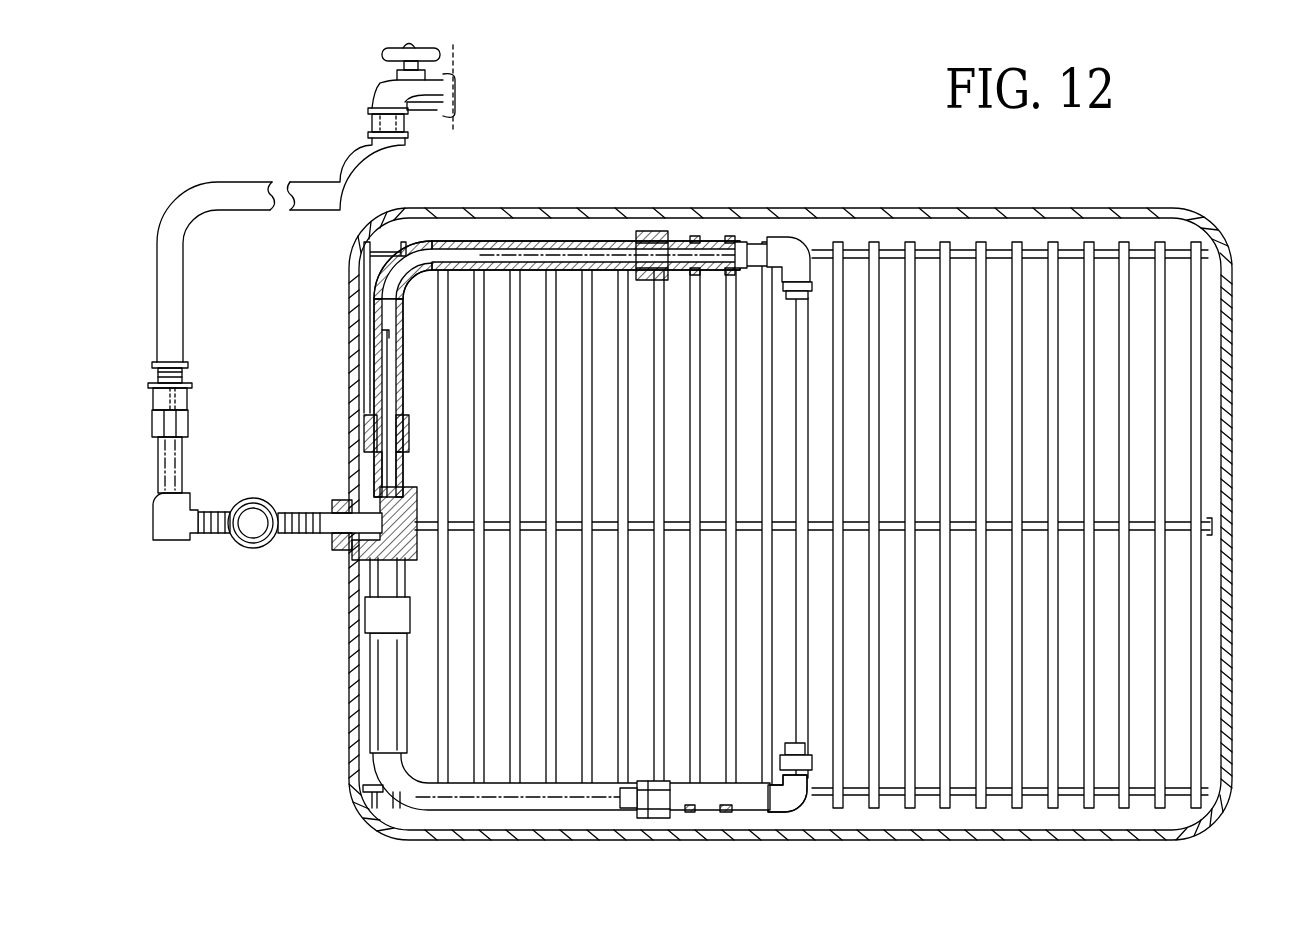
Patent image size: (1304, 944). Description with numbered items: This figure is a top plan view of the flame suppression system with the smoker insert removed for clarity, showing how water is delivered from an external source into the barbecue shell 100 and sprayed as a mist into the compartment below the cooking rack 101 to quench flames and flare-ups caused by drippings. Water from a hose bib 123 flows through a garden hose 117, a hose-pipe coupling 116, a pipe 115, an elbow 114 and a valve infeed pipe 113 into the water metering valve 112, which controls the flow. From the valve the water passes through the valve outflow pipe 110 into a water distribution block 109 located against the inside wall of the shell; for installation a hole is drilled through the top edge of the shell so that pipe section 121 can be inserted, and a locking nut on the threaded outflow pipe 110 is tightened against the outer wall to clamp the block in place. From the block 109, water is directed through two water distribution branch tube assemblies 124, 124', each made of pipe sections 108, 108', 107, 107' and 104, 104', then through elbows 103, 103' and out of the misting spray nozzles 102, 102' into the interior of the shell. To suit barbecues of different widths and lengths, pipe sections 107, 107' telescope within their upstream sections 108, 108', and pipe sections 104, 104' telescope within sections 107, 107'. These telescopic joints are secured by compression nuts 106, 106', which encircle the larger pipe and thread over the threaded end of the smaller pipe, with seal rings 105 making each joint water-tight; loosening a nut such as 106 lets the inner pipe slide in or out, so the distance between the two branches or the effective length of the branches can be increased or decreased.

The barbecue shell 100 is at (1225, 250).
The cooking rack 101 is at (1222, 434).
The misting spray nozzle 102 is at (849, 461).
The misting spray nozzle 102' is at (853, 818).
The elbow 103 is at (818, 519).
The elbow 103' is at (784, 834).
The pipe section 104 is at (744, 206).
The pipe section 104' is at (676, 841).
The seal ring 105 is at (662, 250).
The compression nut 106 is at (475, 320).
The compression nut 106' is at (476, 763).
The pipe section 107 is at (557, 221).
The pipe section 107' is at (571, 763).
The pipe section 108 is at (341, 468).
The pipe section 108' is at (340, 625).
The water distribution block 109 is at (380, 592).
The valve outflow pipe 110 is at (355, 550).
The water metering valve 112 is at (248, 548).
The valve infeed pipe 113 is at (207, 534).
The elbow 114 is at (152, 520).
The pipe 115 is at (158, 454).
The hose-pipe coupling 116 is at (185, 398).
The garden hose 117 is at (184, 298).
The pipe section 121 is at (298, 542).
The hose bib 123 is at (378, 93).
The water distribution branch tube assembly 124 is at (440, 278).
The water distribution branch tube assembly 124' is at (390, 839).